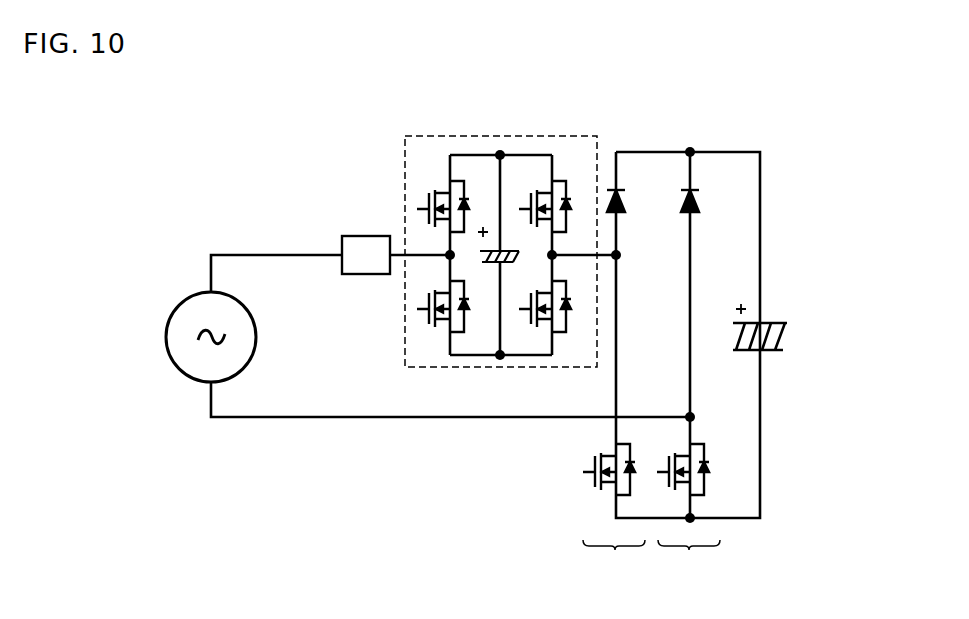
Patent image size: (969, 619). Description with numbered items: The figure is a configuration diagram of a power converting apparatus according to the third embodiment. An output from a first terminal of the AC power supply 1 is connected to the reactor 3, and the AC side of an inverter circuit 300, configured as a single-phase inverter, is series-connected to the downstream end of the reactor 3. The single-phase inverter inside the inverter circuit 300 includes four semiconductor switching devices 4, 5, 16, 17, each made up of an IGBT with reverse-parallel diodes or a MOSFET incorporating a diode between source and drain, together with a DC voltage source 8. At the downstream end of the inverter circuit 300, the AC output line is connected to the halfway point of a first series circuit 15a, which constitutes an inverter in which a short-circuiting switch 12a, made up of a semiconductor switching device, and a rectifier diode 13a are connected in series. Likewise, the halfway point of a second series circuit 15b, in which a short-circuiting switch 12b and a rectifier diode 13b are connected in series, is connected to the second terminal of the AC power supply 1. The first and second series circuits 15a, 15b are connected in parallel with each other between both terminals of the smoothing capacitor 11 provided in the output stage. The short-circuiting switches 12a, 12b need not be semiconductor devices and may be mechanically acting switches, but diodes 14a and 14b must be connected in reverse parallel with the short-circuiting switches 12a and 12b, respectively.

The AC power supply 1 is at (165, 335).
The reactor 3 is at (342, 233).
The inverter circuit 300 is at (405, 137).
The semiconductor switching device 4 is at (427, 327).
The semiconductor switching device 5 is at (533, 182).
The semiconductor switching device 16 is at (427, 197).
The semiconductor switching device 17 is at (562, 342).
The DC voltage source 8 is at (490, 270).
The smoothing capacitor 11 is at (780, 318).
The short-circuiting switch 12a is at (592, 490).
The short-circuiting switch 12b is at (661, 460).
The rectifier diode 13a is at (625, 190).
The rectifier diode 13b is at (703, 190).
The diode 14a is at (637, 463).
The diode 14b is at (713, 467).
The first series circuit 15a is at (598, 585).
The second series circuit 15b is at (672, 585).